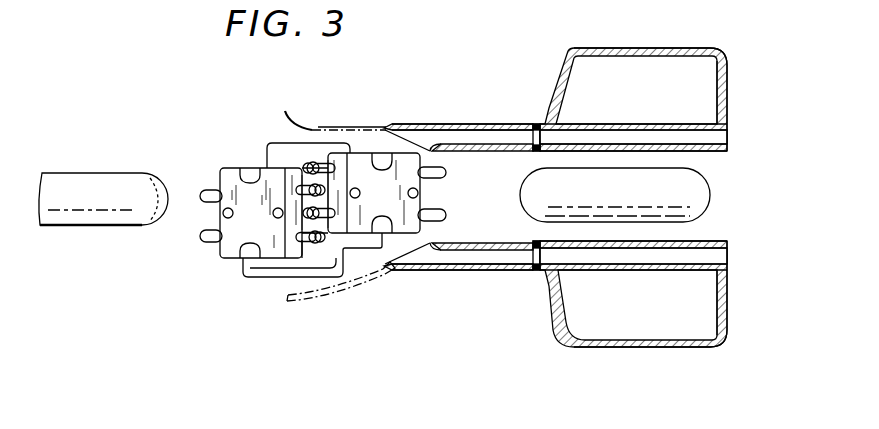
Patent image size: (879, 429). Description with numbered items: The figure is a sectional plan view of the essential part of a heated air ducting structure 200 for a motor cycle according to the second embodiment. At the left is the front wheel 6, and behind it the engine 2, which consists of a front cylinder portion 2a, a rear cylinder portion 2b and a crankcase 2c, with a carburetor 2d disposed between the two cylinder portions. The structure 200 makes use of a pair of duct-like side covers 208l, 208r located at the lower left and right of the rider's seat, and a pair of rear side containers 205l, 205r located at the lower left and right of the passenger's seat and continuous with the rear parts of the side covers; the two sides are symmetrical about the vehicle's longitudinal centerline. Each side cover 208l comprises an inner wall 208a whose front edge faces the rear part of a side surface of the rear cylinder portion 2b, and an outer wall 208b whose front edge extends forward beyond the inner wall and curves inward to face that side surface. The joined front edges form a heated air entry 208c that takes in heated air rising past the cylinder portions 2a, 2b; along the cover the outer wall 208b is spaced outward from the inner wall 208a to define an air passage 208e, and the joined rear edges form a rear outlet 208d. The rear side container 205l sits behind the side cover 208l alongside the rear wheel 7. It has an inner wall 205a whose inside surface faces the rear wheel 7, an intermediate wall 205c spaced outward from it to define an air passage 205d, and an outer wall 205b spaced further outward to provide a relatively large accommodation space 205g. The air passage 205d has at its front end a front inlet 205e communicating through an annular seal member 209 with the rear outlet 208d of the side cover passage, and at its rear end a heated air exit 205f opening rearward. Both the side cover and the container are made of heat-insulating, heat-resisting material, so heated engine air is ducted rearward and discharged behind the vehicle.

The engine 2 is at (240, 280).
The front cylinder portion 2a is at (228, 168).
The rear cylinder portion 2b is at (360, 152).
The crankcase 2c is at (285, 278).
The carburetor 2d is at (323, 152).
The front wheel 6 is at (132, 216).
The rear wheel 7 is at (700, 195).
The heated air ducting structure 200 is at (502, 362).
The inner wall 205a is at (690, 151).
The outer wall 205b is at (630, 48).
The intermediate wall 205c is at (686, 124).
The air passage 205d is at (631, 142).
The front inlet 205e is at (548, 137).
The heated air exit 205f is at (727, 133).
The accommodation space 205g is at (718, 60).
The rear side container 205l is at (645, 352).
The rear side container 205r is at (672, 46).
The inner wall 208a is at (480, 144).
The outer wall 208b is at (430, 124).
The heated air entry 208c is at (387, 126).
The rear outlet 208d is at (528, 166).
The air passage 208e is at (478, 126).
The side cover 208l is at (453, 290).
The side cover 208r is at (460, 112).
The annular seal member 209 is at (536, 124).